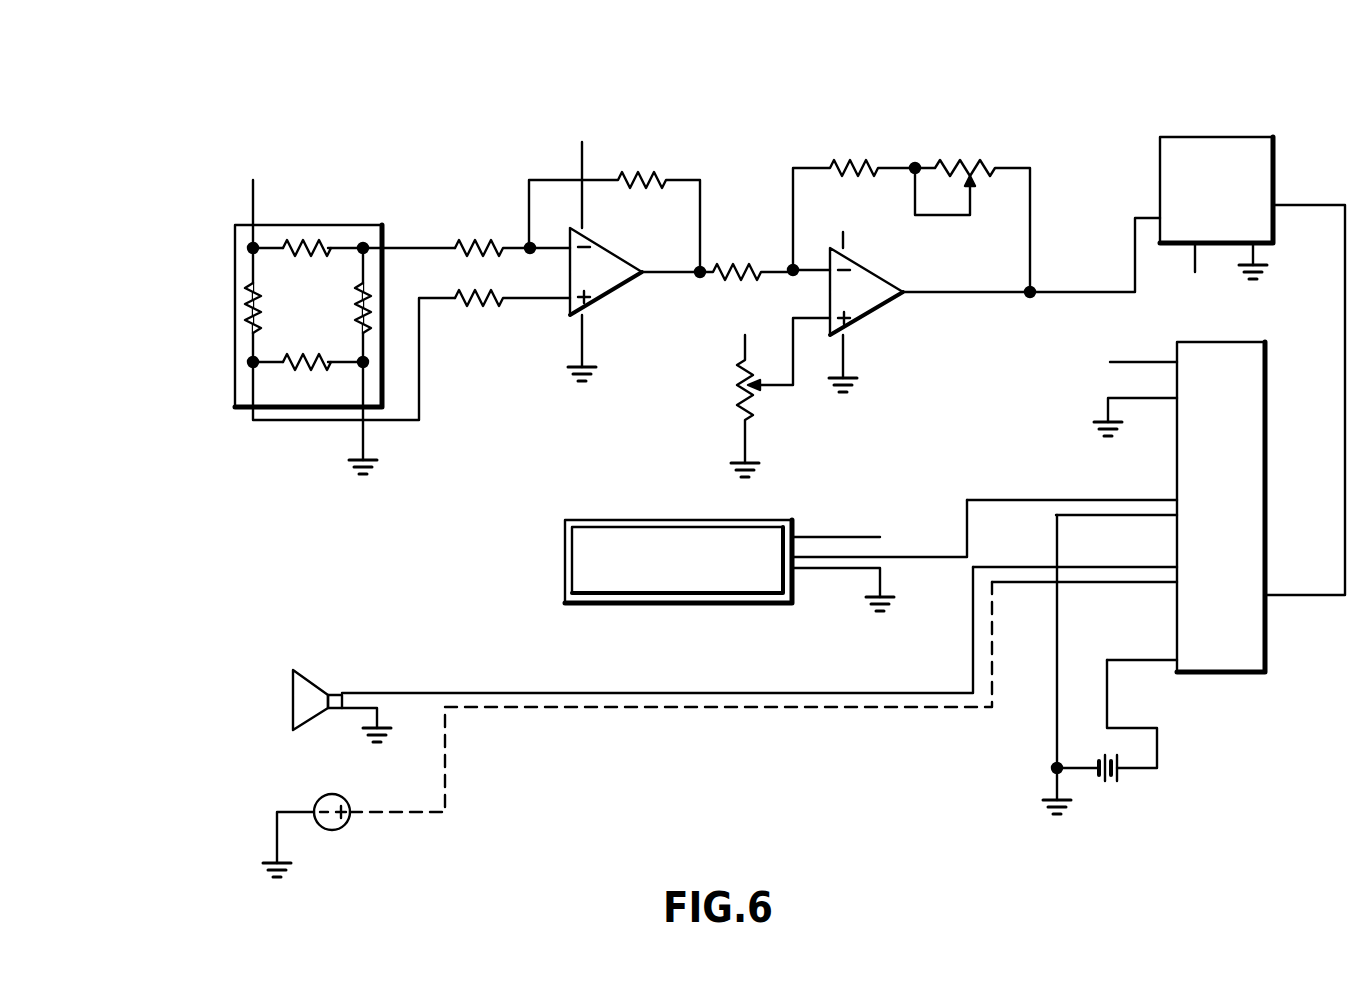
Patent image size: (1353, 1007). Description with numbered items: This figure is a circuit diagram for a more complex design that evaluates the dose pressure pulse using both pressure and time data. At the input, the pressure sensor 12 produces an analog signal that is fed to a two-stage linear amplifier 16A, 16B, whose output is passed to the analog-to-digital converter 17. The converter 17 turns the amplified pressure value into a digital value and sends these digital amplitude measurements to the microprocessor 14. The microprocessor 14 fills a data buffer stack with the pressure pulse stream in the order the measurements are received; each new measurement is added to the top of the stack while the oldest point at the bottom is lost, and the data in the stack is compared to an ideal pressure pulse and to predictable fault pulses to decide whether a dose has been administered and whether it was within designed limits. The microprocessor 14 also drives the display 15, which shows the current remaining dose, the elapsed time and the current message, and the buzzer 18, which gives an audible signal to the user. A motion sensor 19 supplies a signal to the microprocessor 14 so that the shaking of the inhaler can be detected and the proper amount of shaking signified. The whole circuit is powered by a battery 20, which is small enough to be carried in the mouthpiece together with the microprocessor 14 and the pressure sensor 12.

The pressure sensor 12 is at (312, 223).
The analog-to-digital converter 17 is at (1200, 137).
The linear amplifier 16A is at (602, 297).
The linear amplifier 16B is at (867, 318).
The microprocessor 14 is at (1265, 412).
The display 15 is at (637, 519).
The buzzer 18 is at (318, 685).
The motion sensor 19 is at (340, 828).
The battery 20 is at (1107, 783).